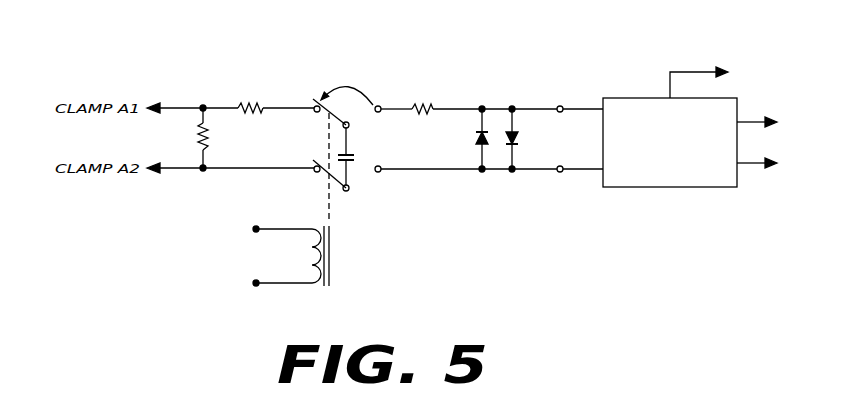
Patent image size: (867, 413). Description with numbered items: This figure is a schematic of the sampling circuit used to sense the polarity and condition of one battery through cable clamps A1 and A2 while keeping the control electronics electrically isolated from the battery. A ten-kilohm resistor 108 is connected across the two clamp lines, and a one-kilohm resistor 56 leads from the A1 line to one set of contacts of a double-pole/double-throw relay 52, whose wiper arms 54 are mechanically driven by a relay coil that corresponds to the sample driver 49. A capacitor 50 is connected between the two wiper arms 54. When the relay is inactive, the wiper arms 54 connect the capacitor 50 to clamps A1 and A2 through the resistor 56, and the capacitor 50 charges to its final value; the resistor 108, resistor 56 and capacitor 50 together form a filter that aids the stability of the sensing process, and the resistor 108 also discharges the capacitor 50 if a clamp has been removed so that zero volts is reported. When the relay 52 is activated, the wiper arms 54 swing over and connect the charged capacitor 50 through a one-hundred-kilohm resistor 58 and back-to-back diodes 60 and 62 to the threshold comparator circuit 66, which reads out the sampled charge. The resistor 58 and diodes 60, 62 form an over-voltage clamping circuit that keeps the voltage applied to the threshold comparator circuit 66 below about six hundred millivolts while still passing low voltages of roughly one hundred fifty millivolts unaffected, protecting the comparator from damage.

The sample driver 49 is at (258, 257).
The capacitor 50 is at (354, 165).
The double-pole/double-throw relay 52 is at (344, 201).
The wiper arms 54 is at (333, 113).
The 1K resistor 56 is at (258, 104).
The 100K resistor 58 is at (424, 118).
The diode 60 is at (476, 141).
The diode 62 is at (519, 141).
The threshold comparator circuit 66 is at (632, 97).
The 10K resistor 108 is at (210, 136).